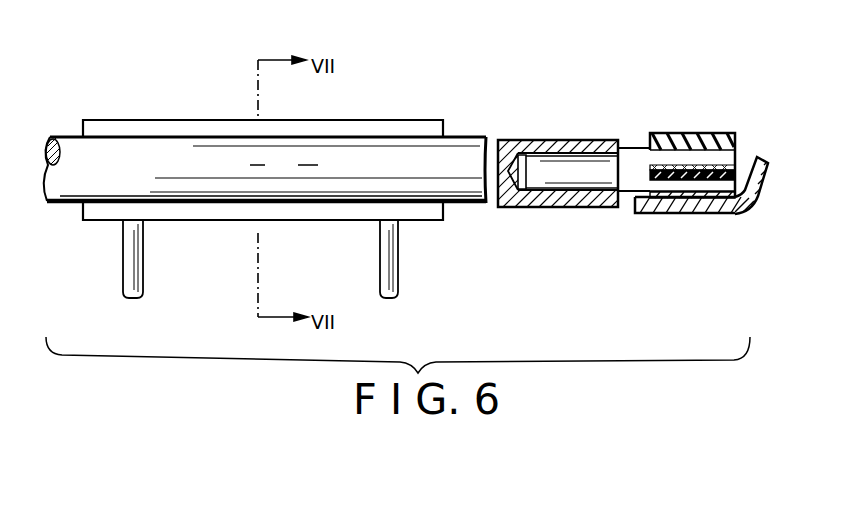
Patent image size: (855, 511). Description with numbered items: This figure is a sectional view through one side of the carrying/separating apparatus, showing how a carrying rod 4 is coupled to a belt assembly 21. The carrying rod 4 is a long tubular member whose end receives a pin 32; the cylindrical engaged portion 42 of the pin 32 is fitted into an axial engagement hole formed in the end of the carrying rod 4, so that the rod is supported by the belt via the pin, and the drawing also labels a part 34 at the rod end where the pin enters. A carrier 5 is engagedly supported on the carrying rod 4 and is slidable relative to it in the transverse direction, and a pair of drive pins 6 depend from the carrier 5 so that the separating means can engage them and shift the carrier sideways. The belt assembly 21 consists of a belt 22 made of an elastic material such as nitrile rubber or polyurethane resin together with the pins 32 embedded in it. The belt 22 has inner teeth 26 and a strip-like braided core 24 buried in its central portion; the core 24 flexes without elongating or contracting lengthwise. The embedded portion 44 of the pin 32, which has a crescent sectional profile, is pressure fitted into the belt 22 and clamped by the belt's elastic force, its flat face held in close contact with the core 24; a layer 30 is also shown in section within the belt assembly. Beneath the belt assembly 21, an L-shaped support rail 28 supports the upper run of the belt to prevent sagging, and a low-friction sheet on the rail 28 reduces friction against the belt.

The carrying rod 4 is at (470, 137).
The carrier 5 is at (362, 120).
The drive pin 6 is at (143, 272).
The belt assembly 21 is at (694, 126).
The belt 22 is at (726, 133).
The core 24 is at (758, 160).
The inner tooth 26 is at (667, 190).
The support rail 28 is at (748, 213).
The intermediate layer 30 is at (679, 200).
The pin 32 is at (634, 148).
The coupling block 34 is at (558, 188).
The engaged portion 42 is at (546, 160).
The embedded portion 44 is at (677, 150).